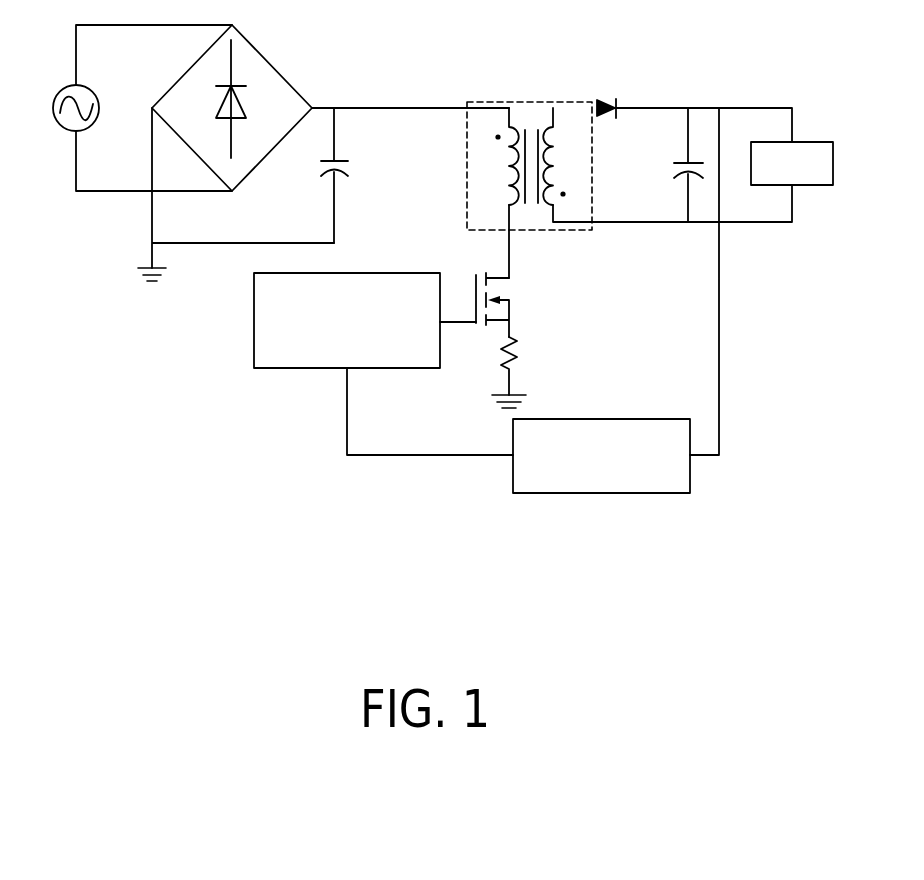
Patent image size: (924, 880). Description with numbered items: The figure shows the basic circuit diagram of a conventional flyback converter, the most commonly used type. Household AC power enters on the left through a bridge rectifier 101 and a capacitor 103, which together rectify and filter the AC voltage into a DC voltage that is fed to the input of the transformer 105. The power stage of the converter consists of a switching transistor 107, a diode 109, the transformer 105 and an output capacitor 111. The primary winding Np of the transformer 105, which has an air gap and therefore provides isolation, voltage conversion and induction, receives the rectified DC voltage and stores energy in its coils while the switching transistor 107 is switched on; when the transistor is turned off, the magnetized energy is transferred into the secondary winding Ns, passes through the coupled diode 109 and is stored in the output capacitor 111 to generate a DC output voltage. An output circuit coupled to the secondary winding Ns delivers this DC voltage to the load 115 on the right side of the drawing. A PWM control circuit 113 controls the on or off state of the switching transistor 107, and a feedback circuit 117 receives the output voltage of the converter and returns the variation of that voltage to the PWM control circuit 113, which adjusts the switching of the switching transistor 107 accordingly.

The bridge rectifier 101 is at (270, 100).
The capacitor 103 is at (358, 167).
The transformer 105 is at (530, 103).
The switching transistor 107 is at (514, 290).
The diode 109 is at (601, 100).
The output capacitor 111 is at (698, 148).
The PWM control circuit 113 is at (313, 375).
The load 115 is at (838, 152).
The feedback circuit 117 is at (612, 495).